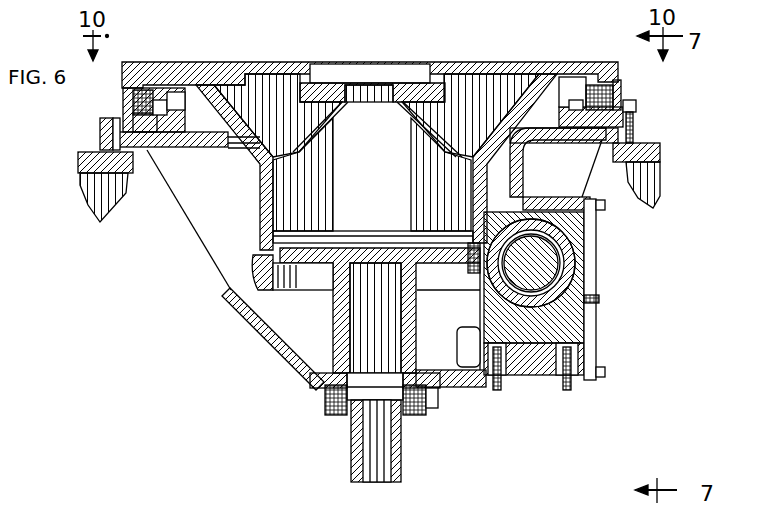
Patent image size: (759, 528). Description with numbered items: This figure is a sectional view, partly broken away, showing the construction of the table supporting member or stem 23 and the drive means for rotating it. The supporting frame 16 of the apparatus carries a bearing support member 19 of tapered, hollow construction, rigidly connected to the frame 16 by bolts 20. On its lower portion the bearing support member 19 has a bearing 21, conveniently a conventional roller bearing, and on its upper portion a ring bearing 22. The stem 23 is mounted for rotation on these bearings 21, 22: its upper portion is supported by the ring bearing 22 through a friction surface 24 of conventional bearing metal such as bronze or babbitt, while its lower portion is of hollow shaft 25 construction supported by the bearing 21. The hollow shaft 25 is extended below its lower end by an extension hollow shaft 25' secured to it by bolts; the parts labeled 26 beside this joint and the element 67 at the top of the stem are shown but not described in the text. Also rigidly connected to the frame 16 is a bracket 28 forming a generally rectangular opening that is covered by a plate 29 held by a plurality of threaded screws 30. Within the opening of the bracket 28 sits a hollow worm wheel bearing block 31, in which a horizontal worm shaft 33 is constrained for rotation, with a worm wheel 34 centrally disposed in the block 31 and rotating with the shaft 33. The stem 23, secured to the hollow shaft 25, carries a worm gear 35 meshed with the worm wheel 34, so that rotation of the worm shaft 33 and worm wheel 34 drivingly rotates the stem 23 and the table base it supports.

The supporting frame 16 is at (86, 152).
The bearing support member 19 is at (191, 216).
The bolts 20 is at (633, 106).
The bearing 21 is at (440, 410).
The ring bearing 22 is at (120, 96).
The stem 23 is at (531, 58).
The friction surface 24 is at (129, 108).
The hollow shaft 25 is at (380, 241).
The extension hollow shaft 25' is at (395, 441).
The nut 26 is at (345, 412).
The bracket 28 is at (522, 181).
The plate 29 is at (593, 313).
The screws 30 is at (604, 206).
The worm wheel bearing block 31 is at (572, 335).
The worm shaft 33 is at (541, 264).
The worm wheel 34 is at (569, 243).
The worm gear 35 is at (260, 290).
The cover 67 is at (413, 72).